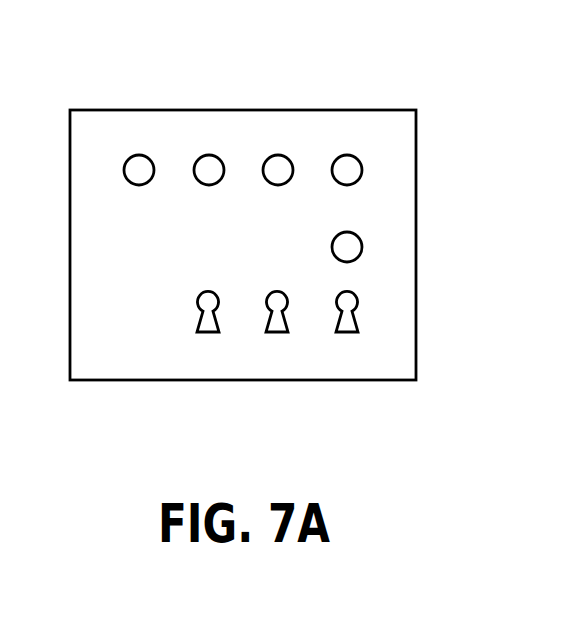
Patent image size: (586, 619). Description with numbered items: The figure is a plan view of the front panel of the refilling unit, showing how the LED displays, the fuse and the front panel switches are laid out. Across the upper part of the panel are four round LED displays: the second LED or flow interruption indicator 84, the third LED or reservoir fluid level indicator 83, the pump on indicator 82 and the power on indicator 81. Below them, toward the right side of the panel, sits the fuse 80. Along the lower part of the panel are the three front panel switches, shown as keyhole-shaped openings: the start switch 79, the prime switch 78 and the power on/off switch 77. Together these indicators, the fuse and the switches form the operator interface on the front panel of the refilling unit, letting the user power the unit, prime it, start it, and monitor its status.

The power on/off switch 77 is at (363, 339).
The prime switch 78 is at (293, 338).
The start switch 79 is at (223, 338).
The fuse 80 is at (373, 247).
The power on indicator 81 is at (350, 148).
The pump on indicator 82 is at (281, 148).
The third LED (reservoir fluid level indicator) 83 is at (212, 148).
The second LED (flow interruption indicator) 84 is at (143, 148).